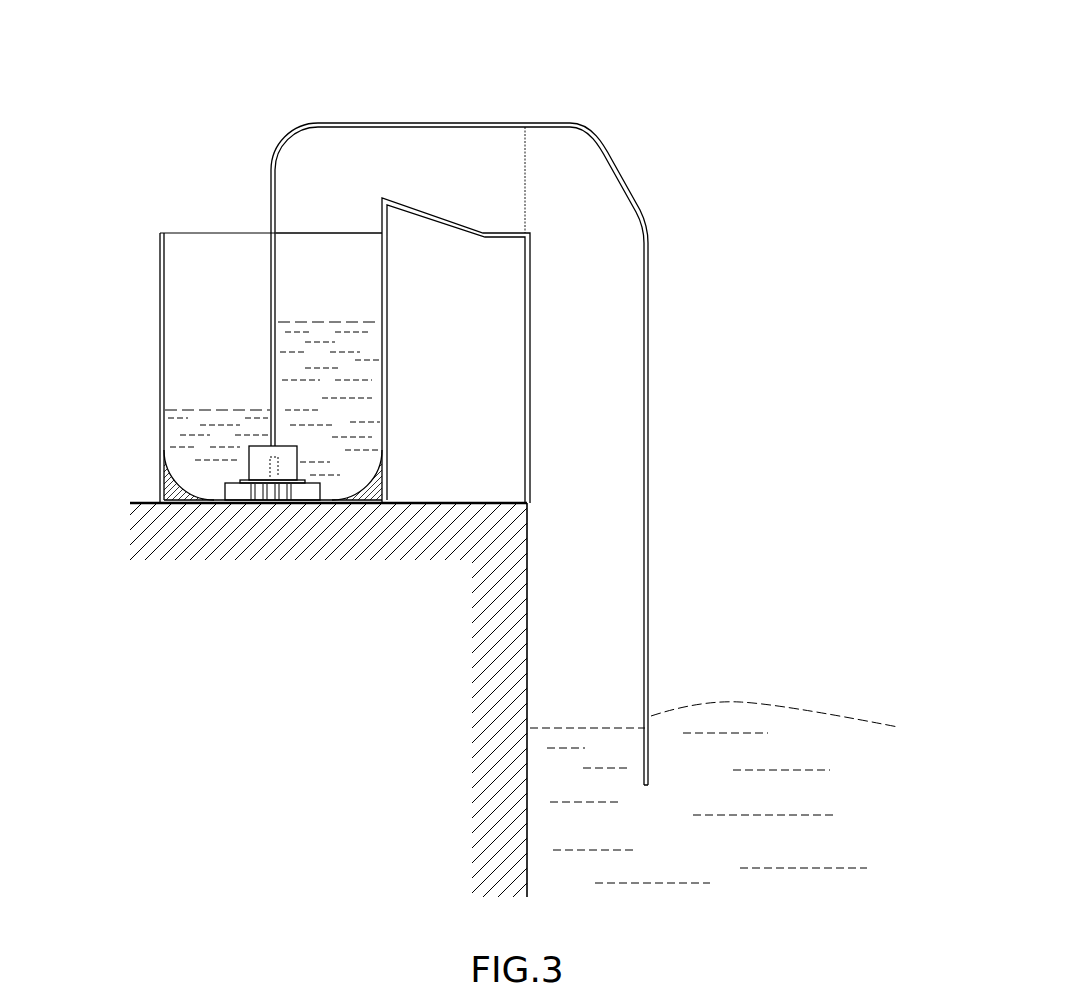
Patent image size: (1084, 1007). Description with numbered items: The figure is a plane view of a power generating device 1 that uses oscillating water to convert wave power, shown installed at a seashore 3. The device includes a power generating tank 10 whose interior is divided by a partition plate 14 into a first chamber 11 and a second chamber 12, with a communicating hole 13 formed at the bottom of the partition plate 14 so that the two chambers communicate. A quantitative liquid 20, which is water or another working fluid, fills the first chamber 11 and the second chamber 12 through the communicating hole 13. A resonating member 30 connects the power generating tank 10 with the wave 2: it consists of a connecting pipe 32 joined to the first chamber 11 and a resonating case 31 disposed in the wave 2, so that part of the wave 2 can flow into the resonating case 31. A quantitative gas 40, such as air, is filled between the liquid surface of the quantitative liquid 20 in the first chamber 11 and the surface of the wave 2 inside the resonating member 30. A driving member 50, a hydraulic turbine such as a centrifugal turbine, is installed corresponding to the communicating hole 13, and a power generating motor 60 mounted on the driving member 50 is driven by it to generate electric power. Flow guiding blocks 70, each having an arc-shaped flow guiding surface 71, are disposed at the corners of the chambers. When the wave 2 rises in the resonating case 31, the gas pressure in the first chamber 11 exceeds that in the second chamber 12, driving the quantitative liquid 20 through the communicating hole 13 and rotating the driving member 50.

The power generating device 1 is at (521, 56).
The wave 2 is at (752, 712).
The seashore 3 is at (500, 502).
The power generating tank 10 is at (162, 273).
The first chamber 11 is at (318, 234).
The second chamber 12 is at (215, 234).
The communicating hole 13 is at (272, 458).
The partition plate 14 is at (271, 282).
The quantitative liquid 20 is at (272, 338).
The resonating member 30 is at (484, 153).
The resonating case 31 is at (613, 181).
The connecting pipe 32 is at (500, 123).
The quantitative gas 40 is at (600, 372).
The driving member 50 is at (263, 490).
The power generating motor 60 is at (331, 424).
The flow guiding block 70 is at (351, 537).
The arc-shaped flow guiding surface 71 is at (357, 473).